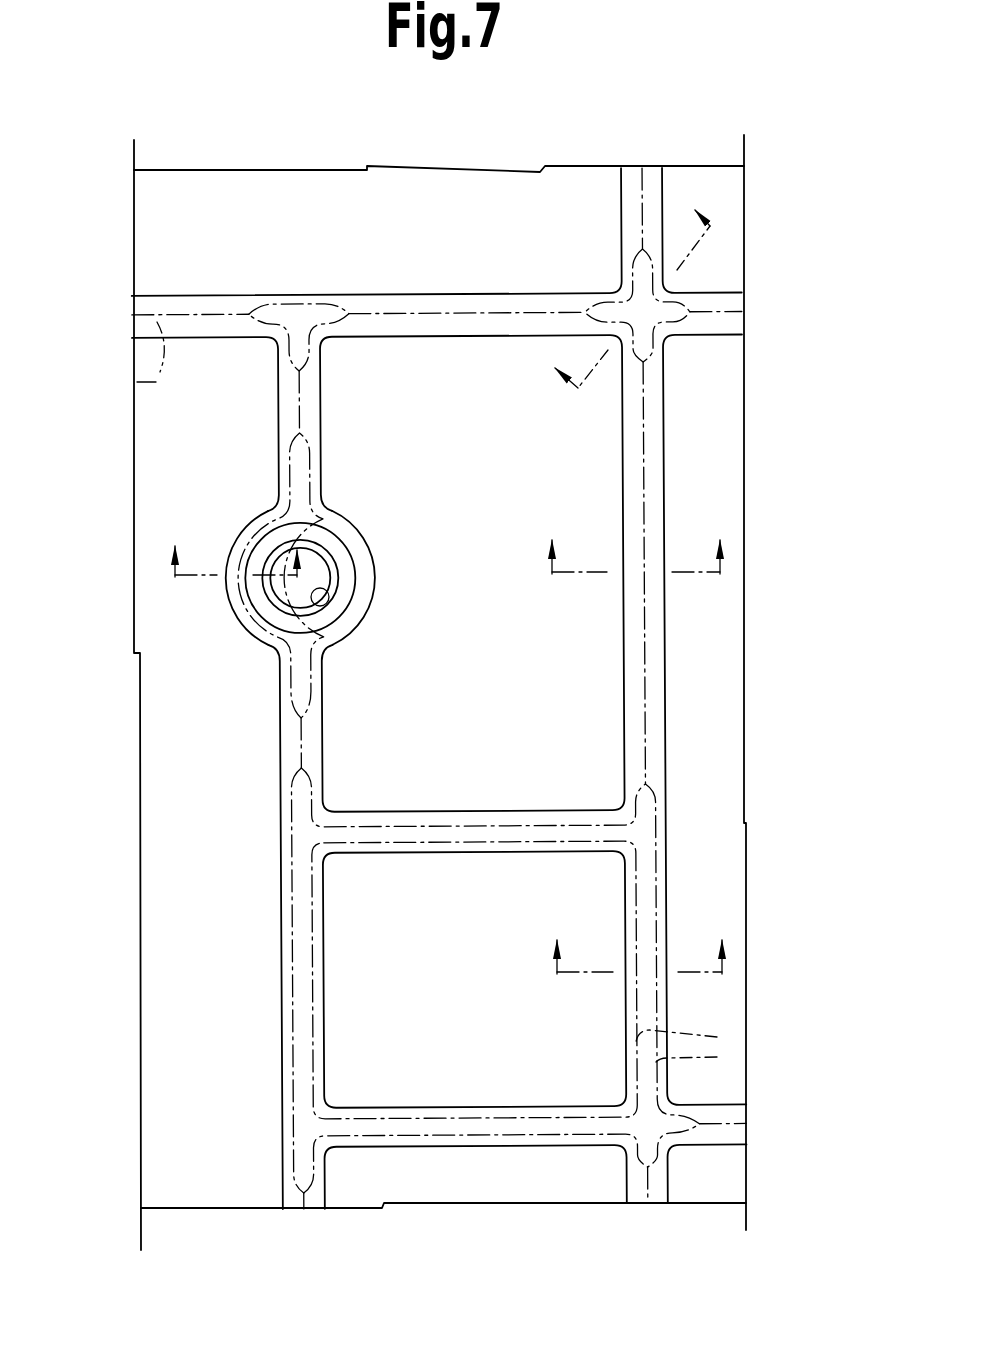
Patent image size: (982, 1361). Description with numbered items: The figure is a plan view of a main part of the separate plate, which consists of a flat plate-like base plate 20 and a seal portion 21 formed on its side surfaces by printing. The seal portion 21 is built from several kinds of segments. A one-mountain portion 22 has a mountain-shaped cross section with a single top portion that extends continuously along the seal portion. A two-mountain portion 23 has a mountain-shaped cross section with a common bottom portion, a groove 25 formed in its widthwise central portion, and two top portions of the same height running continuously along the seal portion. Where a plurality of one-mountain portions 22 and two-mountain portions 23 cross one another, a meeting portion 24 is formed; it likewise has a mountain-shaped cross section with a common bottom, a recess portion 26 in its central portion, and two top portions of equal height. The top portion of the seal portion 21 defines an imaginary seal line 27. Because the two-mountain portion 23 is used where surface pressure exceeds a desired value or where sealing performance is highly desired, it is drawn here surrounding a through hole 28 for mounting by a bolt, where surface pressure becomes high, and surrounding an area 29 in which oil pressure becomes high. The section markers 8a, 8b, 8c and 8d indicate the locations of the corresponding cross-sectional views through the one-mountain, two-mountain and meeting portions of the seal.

The base plate 20 is at (165, 832).
The seal portion 21 is at (678, 630).
The one-mountain portion 22 is at (448, 290).
The two-mountain portion 23 is at (373, 537).
The meeting portion 24 is at (321, 293).
The groove 25 is at (303, 673).
The recess portion 26 is at (283, 308).
The imaginary seal line 27 is at (278, 420).
The through hole 28 is at (329, 590).
The area 29 is at (500, 999).
The section line 8a is at (619, 535).
The section line 8b is at (407, 556).
The section line 8c is at (630, 939).
The section line 8d is at (702, 214).